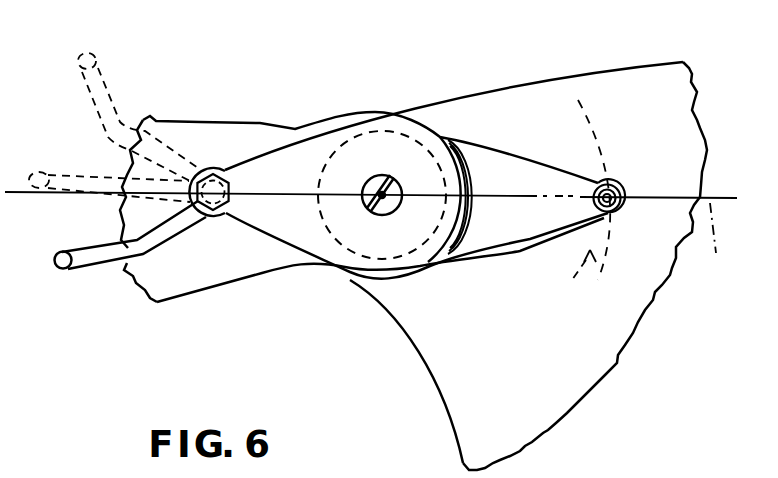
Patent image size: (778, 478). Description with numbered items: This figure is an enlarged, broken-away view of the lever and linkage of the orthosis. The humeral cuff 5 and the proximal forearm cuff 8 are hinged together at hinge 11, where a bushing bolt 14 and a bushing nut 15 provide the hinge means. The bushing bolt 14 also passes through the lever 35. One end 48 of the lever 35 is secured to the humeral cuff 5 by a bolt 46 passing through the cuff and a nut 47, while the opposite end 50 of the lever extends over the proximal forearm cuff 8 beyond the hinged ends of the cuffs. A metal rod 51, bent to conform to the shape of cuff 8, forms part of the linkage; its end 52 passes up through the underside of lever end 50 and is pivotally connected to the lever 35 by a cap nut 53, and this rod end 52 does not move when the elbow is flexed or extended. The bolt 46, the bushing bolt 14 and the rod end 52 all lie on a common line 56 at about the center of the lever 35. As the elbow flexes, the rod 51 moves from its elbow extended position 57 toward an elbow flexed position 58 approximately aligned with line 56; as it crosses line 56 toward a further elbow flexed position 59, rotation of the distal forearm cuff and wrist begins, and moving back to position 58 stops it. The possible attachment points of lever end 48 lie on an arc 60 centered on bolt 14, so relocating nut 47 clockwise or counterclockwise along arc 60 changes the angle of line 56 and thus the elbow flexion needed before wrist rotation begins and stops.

The humeral cuff 5 is at (588, 385).
The proximal forearm cuff 8 is at (230, 268).
The hinge 11 is at (372, 120).
The bushing bolt 14 is at (382, 177).
The bushing nut 15 is at (390, 214).
The lever 35 is at (313, 155).
The bolt 46 is at (608, 212).
The nut 47 is at (600, 187).
The lever end 48 is at (620, 187).
The lever end 50 is at (202, 166).
The rod 51 is at (80, 264).
The rod end 52 is at (221, 167).
The cap nut 53 is at (237, 190).
The common line 56 is at (723, 244).
The elbow extended position 57 is at (104, 262).
The elbow flexed position 58 is at (64, 172).
The elbow flexed position 59 is at (104, 82).
The arc 60 is at (596, 202).